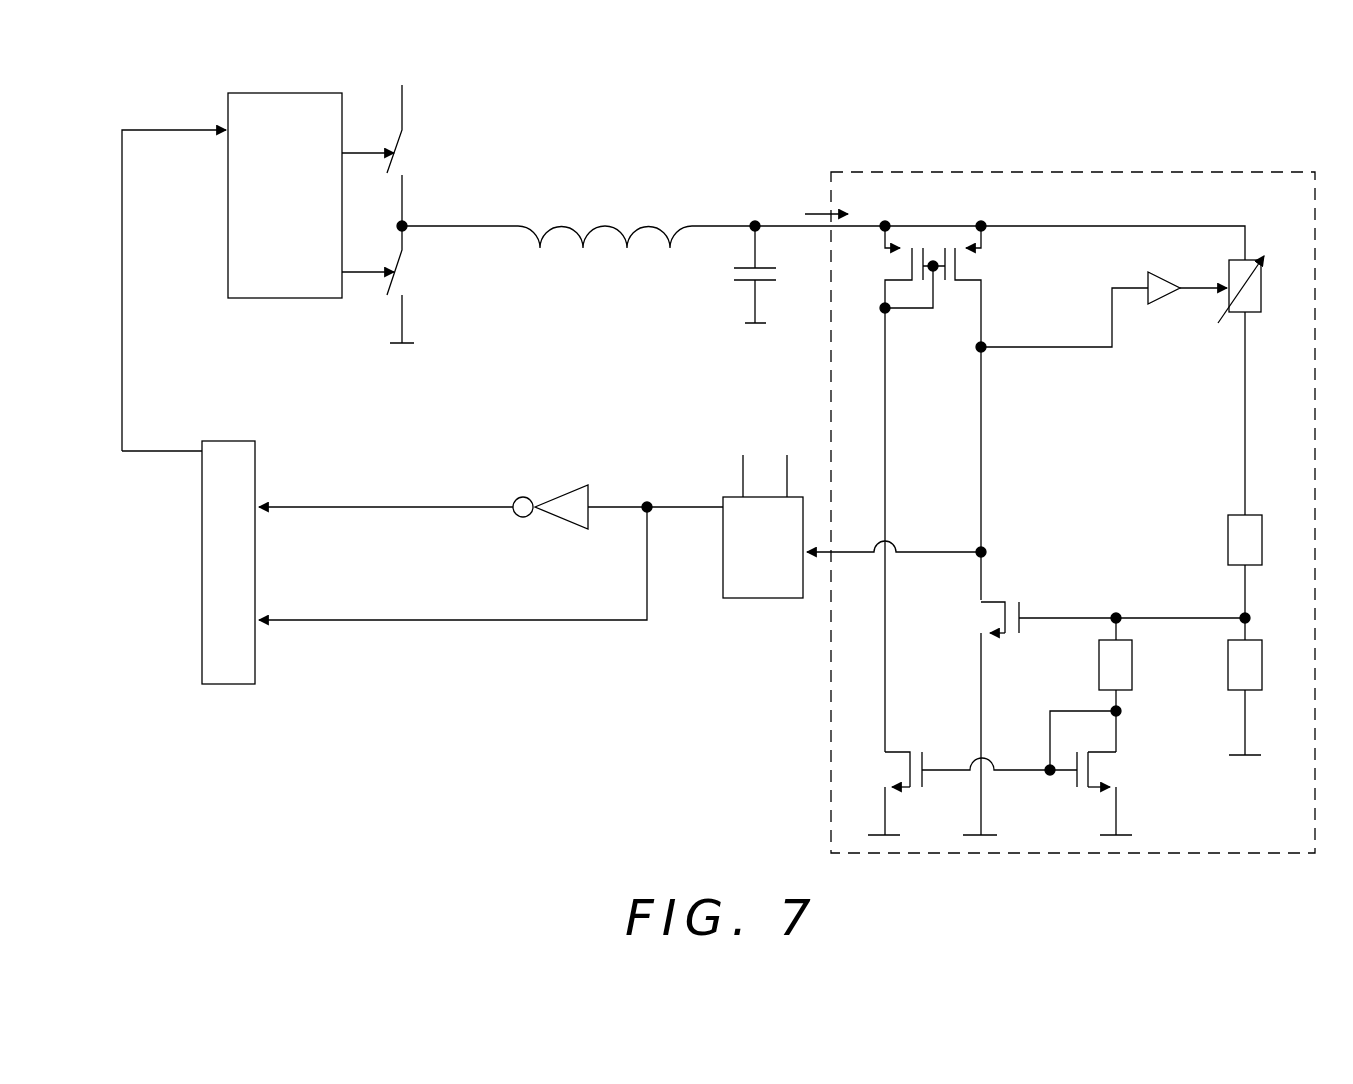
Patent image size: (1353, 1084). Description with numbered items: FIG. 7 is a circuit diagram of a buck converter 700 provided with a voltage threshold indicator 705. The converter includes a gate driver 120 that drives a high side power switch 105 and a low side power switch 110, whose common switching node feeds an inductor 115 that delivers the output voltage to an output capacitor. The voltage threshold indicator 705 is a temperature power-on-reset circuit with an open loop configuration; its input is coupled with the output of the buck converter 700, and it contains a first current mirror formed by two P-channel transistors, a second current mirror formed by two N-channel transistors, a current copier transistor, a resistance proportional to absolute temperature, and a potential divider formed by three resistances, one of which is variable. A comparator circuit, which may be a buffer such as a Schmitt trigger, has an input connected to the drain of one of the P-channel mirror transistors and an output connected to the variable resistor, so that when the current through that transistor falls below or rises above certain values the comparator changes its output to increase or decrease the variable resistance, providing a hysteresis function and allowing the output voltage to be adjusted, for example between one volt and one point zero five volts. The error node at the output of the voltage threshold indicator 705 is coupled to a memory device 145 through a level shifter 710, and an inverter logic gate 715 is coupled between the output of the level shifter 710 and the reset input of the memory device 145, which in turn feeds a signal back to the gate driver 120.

The buck converter 700 is at (550, 676).
The gate driver 120 is at (305, 93).
The high side power switch 105 is at (420, 142).
The low side power switch 110 is at (415, 292).
The inductor 115 is at (617, 215).
The voltage threshold indicator 705 is at (1008, 172).
The memory device 145 is at (243, 441).
The inverter logic gate 715 is at (553, 490).
The level shifter 710 is at (785, 598).